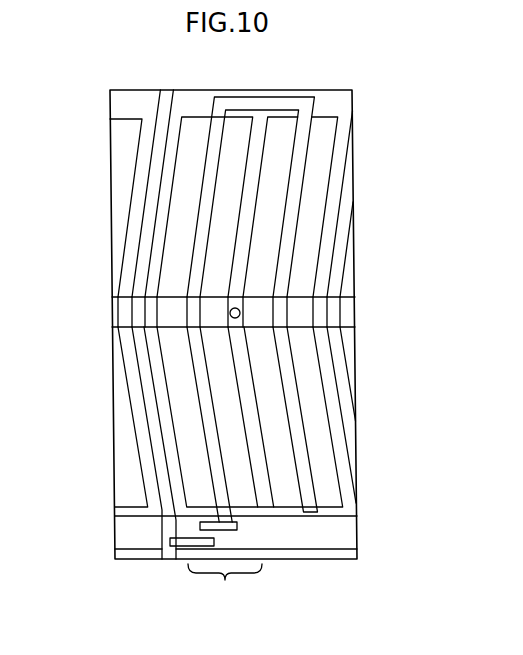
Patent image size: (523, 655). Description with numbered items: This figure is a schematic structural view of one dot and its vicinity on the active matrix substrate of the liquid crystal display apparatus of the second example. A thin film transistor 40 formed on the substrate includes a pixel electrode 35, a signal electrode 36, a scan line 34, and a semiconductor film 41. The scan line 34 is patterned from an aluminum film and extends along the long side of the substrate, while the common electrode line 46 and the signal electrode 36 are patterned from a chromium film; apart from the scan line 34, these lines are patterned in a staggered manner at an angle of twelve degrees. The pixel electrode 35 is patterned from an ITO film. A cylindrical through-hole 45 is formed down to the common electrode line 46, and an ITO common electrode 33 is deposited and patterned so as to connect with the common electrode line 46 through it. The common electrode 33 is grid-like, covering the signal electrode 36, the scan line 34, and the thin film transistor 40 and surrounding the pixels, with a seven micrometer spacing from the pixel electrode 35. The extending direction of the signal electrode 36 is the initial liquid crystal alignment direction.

The common electrode 33 is at (248, 205).
The scan line 34 is at (123, 537).
The pixel electrode 35 is at (305, 102).
The signal electrode 36 is at (157, 455).
The thin film transistor 40 is at (225, 589).
The semiconductor film 41 is at (255, 542).
The through-hole 45 is at (240, 309).
The common electrode line 46 is at (347, 310).